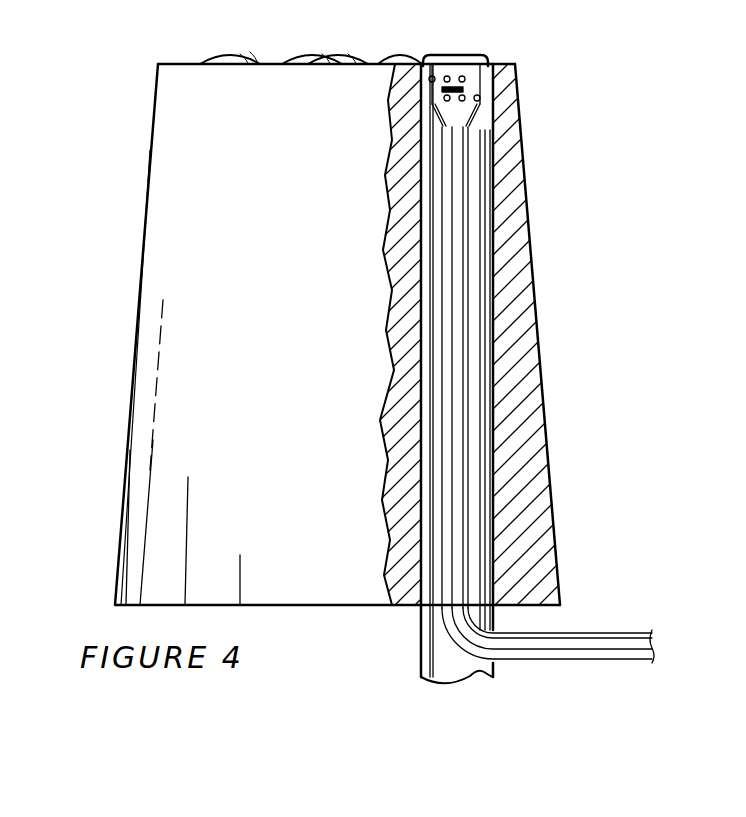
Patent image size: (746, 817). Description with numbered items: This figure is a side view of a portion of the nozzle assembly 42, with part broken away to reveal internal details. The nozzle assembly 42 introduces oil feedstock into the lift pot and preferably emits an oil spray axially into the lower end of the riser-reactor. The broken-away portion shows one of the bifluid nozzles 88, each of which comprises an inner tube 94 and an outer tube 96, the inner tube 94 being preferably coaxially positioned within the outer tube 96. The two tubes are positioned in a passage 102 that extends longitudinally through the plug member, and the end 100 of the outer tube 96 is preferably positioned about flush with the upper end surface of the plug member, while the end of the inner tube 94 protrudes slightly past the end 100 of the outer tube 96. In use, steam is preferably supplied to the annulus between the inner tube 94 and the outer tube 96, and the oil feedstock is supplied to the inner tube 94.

The nozzle assembly 42 is at (132, 116).
The bifluid nozzles 88 is at (233, 52).
The inner tube 94 is at (470, 220).
The outer tube 96 is at (490, 303).
The end of the outer tube 100 is at (488, 72).
The passage 102 is at (497, 377).